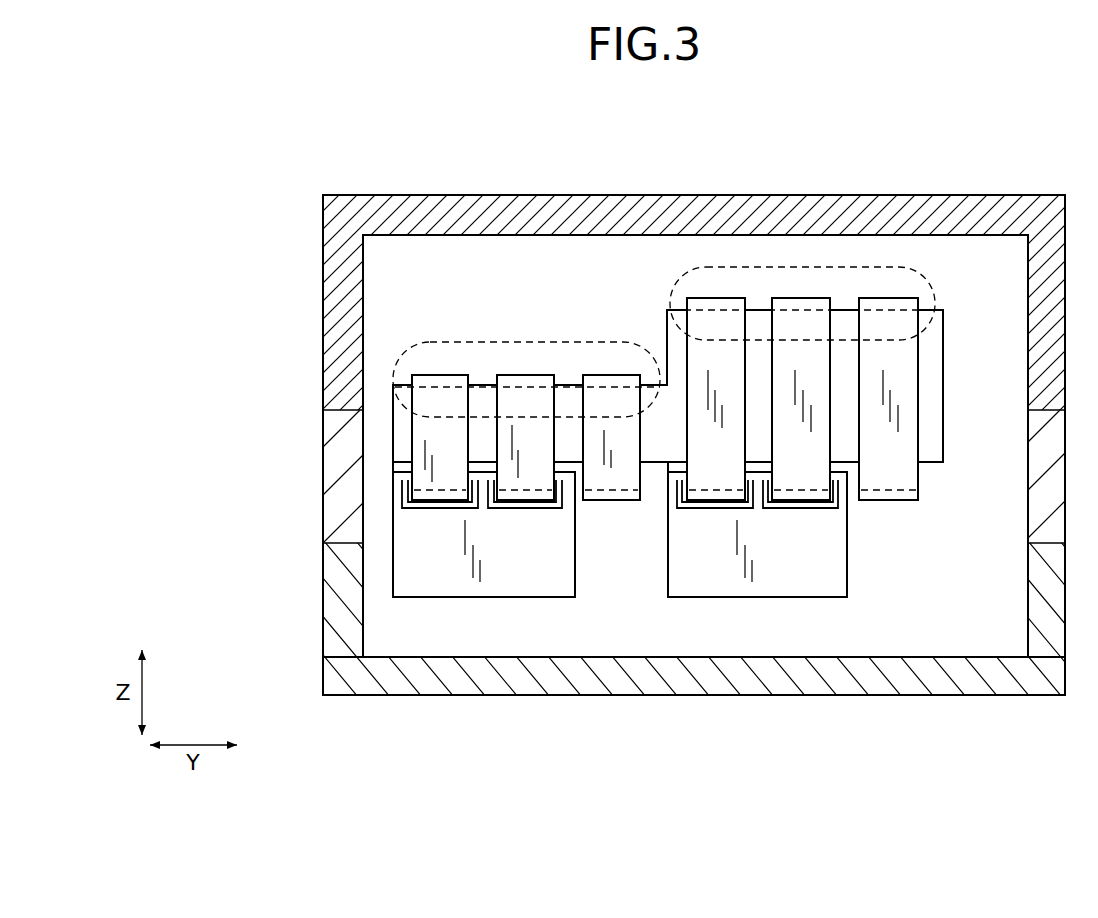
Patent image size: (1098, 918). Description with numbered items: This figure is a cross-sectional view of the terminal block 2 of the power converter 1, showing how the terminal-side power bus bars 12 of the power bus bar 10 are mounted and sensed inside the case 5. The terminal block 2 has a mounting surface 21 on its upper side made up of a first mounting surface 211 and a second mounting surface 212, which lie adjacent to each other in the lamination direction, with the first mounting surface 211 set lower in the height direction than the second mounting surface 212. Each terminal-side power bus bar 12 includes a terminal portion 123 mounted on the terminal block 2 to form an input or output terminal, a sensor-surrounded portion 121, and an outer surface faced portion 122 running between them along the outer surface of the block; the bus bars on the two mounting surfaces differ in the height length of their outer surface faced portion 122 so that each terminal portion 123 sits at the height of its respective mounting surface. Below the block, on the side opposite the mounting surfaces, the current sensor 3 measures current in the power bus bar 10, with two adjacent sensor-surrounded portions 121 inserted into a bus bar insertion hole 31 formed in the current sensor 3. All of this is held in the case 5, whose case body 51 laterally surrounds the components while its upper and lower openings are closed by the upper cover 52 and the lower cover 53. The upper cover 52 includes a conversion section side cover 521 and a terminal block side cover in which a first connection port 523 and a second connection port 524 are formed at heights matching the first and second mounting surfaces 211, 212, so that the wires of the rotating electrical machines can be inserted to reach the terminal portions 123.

The power converter 1 is at (1014, 165).
The terminal block 2 is at (668, 425).
The mounting surface 21 is at (668, 230).
The first mounting surface 211 is at (567, 385).
The second mounting surface 212 is at (840, 310).
The current sensor 3 is at (470, 577).
The bus bar insertion hole 31 is at (413, 514).
The case 5 is at (646, 402).
The case body 51 is at (344, 464).
The upper cover 52 is at (649, 241).
The conversion section side cover 521 is at (500, 191).
The first connection port 523 is at (444, 350).
The second connection port 524 is at (800, 268).
The lower cover 53 is at (337, 626).
The power bus bar 10 is at (406, 468).
The terminal-side power bus bar 12 is at (668, 386).
The sensor-surrounded portion 121 is at (440, 495).
The outer surface faced portion 122 is at (440, 438).
The terminal portion 123 is at (462, 375).